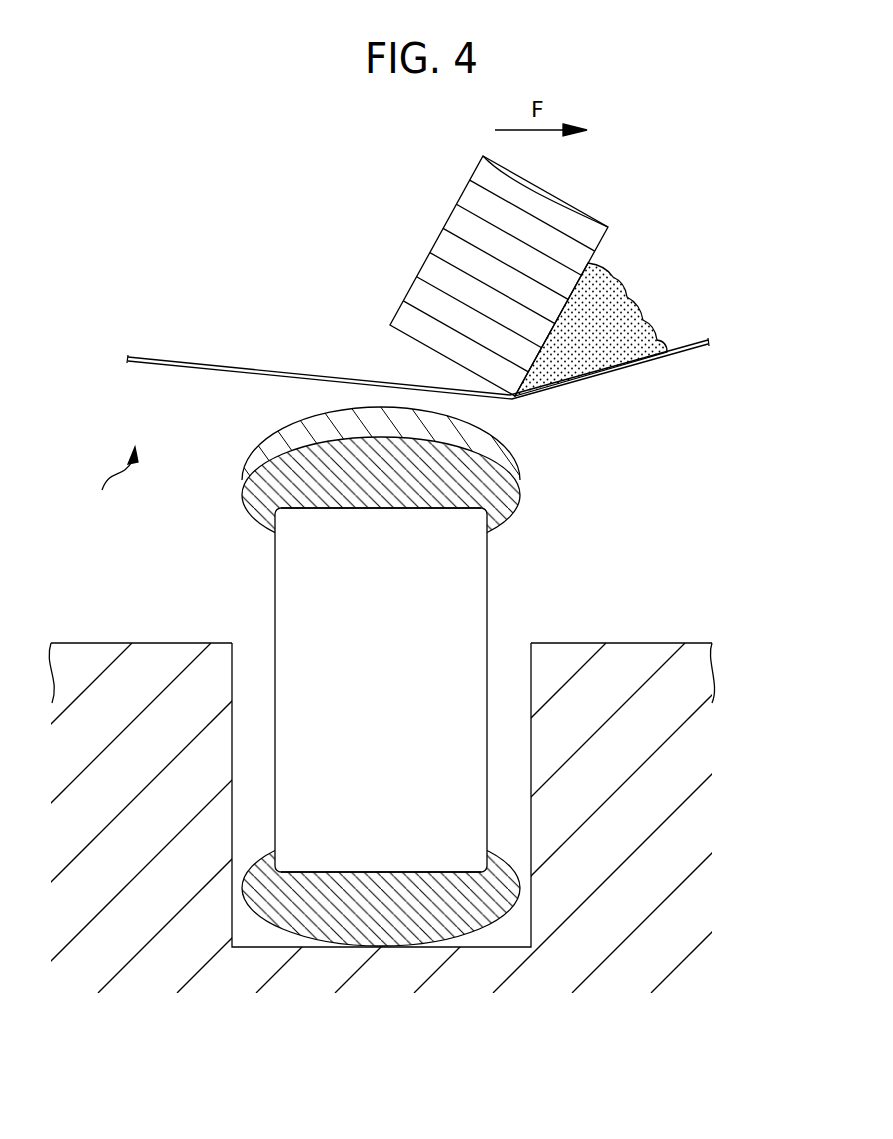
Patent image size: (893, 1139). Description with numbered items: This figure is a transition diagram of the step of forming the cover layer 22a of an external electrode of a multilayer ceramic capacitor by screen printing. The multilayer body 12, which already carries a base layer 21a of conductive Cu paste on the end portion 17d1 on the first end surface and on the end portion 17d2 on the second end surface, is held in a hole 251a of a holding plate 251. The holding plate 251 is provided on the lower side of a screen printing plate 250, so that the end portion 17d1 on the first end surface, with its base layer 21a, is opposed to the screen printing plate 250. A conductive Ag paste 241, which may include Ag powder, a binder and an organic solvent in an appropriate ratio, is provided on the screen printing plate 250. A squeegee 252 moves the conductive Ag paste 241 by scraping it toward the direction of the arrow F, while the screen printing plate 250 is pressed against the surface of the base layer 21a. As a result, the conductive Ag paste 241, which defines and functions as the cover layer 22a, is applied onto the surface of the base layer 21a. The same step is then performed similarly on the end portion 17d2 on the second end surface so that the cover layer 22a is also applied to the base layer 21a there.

The multilayer body 12 is at (487, 610).
The end portion on the first end surface 17d1 is at (392, 518).
The end portion on the second end surface 17d2 is at (347, 832).
The base layer 21a is at (440, 473).
The cover layer 22a is at (110, 482).
The conductive Ag paste 241 is at (625, 298).
The screen printing plate 250 is at (238, 367).
The holding plate 251 is at (672, 643).
The hole 251a is at (230, 702).
The squeegee 252 is at (445, 242).